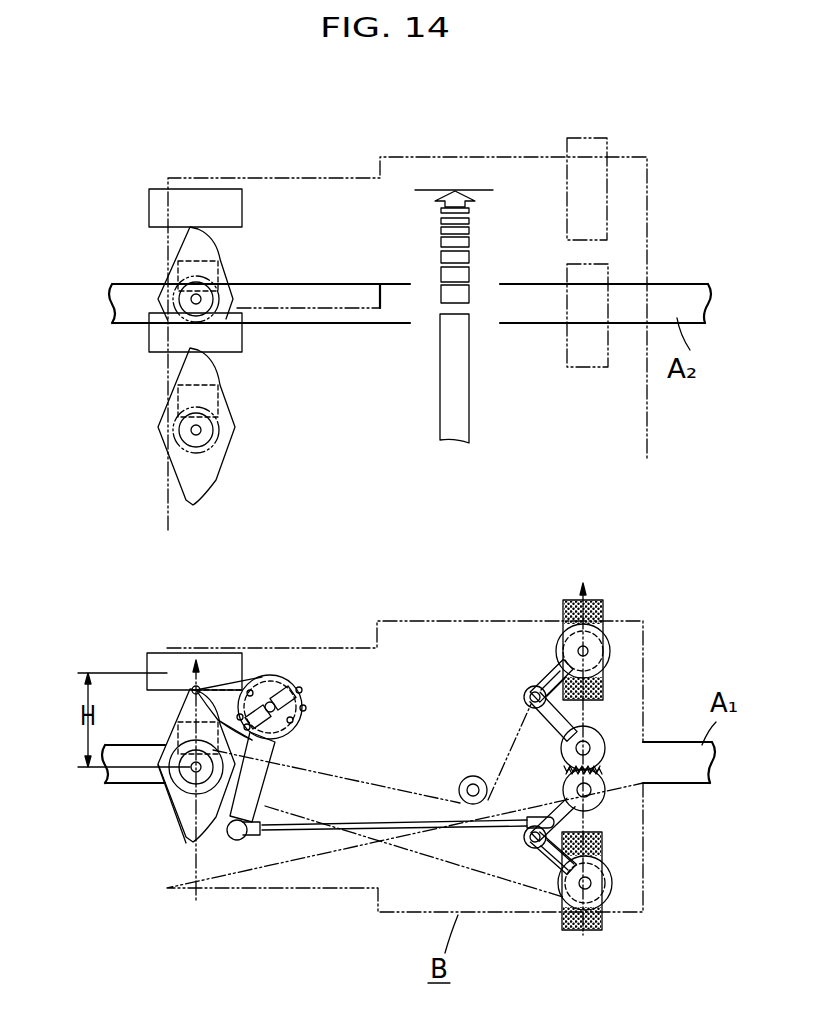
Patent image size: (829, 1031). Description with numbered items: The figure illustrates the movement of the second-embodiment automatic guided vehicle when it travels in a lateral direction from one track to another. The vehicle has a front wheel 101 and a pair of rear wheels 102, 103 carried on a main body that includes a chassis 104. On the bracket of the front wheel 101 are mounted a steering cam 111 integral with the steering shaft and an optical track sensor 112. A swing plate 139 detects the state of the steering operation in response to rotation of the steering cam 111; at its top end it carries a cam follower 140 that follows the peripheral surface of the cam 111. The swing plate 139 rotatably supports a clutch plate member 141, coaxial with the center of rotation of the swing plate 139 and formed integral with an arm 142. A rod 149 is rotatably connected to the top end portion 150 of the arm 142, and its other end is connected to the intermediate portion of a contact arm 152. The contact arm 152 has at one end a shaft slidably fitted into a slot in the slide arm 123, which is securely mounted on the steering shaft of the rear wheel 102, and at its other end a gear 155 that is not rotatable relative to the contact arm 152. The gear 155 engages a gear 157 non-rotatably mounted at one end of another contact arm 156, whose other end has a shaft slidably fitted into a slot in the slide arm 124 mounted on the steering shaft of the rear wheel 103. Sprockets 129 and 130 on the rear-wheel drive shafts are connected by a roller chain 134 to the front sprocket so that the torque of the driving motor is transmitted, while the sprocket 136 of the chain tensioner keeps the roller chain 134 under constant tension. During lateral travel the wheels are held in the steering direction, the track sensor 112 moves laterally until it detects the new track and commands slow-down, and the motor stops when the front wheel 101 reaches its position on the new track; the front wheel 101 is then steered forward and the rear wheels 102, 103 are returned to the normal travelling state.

The front wheel 101 is at (218, 265).
The rear wheel 102 is at (603, 922).
The rear wheel 103 is at (601, 138).
The chassis 104 is at (415, 157).
The steering cam 111 is at (182, 838).
The track sensor 112 is at (148, 218).
The slide arm 123 is at (548, 858).
The slide arm 124 is at (531, 688).
The sprocket 129 is at (598, 886).
The sprocket 130 is at (610, 646).
The roller chain 134 is at (407, 790).
The sprocket 136 is at (471, 776).
The swing plate 139 is at (250, 680).
The cam follower 140 is at (205, 672).
The clutch plate member 141 is at (283, 685).
The arm 142 is at (276, 800).
The rod 149 is at (357, 830).
The top end portion 150 is at (233, 842).
The contact arm 152 is at (565, 822).
The gear 155 is at (598, 792).
The contact arm 156 is at (560, 716).
The gear 157 is at (600, 740).